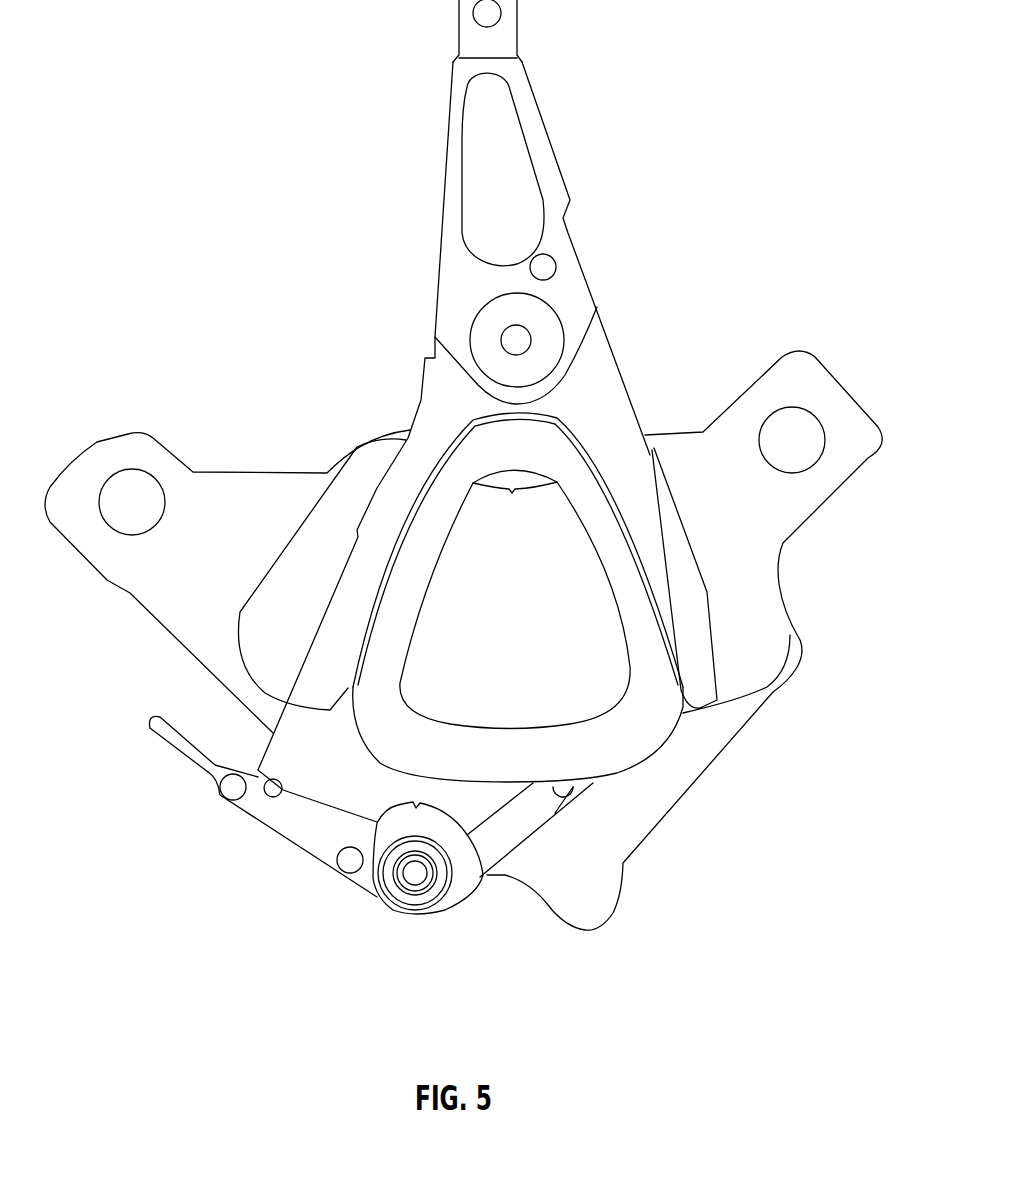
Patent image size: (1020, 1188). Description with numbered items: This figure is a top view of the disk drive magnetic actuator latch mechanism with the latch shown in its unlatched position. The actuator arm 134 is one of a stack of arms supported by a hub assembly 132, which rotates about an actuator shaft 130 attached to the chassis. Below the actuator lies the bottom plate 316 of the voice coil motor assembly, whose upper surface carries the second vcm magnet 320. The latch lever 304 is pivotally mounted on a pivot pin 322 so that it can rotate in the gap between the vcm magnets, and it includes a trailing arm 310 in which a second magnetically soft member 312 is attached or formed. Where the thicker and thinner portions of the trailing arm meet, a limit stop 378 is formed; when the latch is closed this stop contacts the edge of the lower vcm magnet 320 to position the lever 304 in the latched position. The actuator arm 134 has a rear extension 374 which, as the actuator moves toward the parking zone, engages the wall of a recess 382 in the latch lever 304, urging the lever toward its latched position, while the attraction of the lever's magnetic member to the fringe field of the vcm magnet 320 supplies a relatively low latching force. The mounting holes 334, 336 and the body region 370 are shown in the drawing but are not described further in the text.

The actuator shaft 130 is at (518, 343).
The hub assembly 132 is at (533, 312).
The actuator arm 134 is at (530, 120).
The latch lever 304 is at (512, 833).
The trailing arm 310 is at (183, 747).
The second magnetically soft member 312 is at (232, 788).
The bottom plate 316 is at (773, 512).
The second vcm magnet 320 is at (303, 643).
The pivot pin 322 is at (415, 873).
The mounting hole 334 is at (790, 430).
The mounting hole 336 is at (132, 503).
The latch body 370 is at (642, 730).
The rear extension 374 is at (296, 706).
The limit stop 378 is at (267, 796).
The recess 382 is at (373, 825).